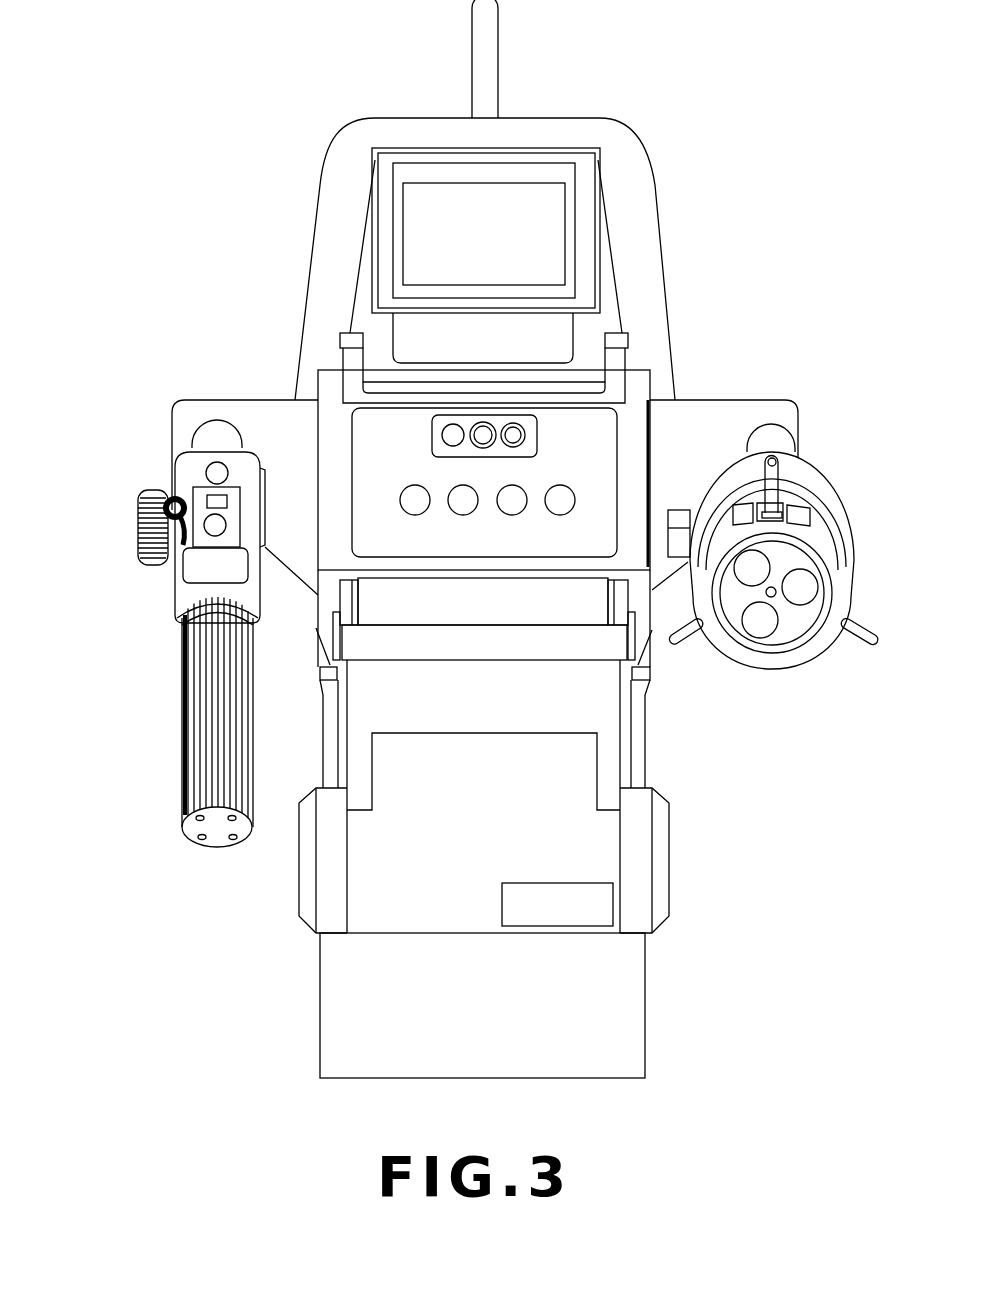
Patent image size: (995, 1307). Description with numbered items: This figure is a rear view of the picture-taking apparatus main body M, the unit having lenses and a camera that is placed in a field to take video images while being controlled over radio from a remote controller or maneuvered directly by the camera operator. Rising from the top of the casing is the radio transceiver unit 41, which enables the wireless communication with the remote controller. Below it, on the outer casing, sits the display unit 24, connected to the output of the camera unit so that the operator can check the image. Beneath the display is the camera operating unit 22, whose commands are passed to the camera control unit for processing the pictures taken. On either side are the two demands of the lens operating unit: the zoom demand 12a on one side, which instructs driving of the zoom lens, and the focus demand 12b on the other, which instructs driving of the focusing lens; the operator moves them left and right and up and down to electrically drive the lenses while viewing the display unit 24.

The picture-taking apparatus main body M is at (280, 114).
The radio transceiver unit 41 is at (485, 62).
The display unit 24 is at (527, 245).
The camera operating unit 22 is at (572, 460).
The zoom demand 12a is at (217, 713).
The focus demand 12b is at (792, 618).